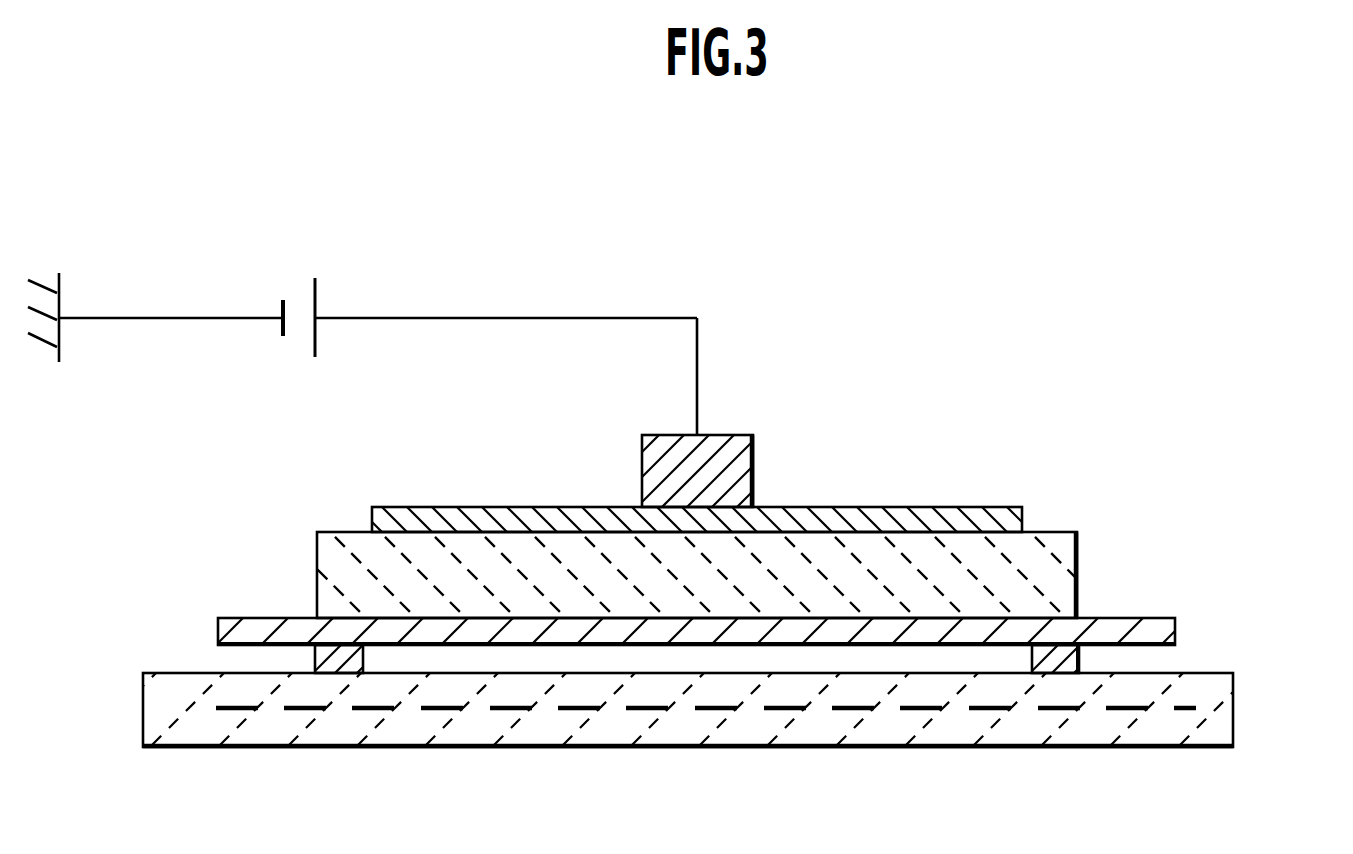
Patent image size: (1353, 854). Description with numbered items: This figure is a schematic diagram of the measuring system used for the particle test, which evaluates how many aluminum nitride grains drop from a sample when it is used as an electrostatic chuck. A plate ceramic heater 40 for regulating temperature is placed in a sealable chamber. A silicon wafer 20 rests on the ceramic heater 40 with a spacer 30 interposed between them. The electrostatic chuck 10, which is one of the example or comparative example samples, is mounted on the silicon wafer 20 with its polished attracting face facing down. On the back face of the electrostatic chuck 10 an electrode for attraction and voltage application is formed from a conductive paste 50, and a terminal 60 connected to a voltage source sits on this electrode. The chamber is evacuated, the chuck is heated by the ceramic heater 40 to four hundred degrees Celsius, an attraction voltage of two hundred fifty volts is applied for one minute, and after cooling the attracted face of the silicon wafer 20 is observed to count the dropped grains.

The electrostatic chuck 10 is at (1077, 565).
The silicon wafer 20 is at (1175, 630).
The spacer 30 is at (1080, 657).
The ceramic heater 40 is at (1233, 712).
The conductive paste 50 is at (922, 507).
The terminal electrode 60 is at (727, 435).